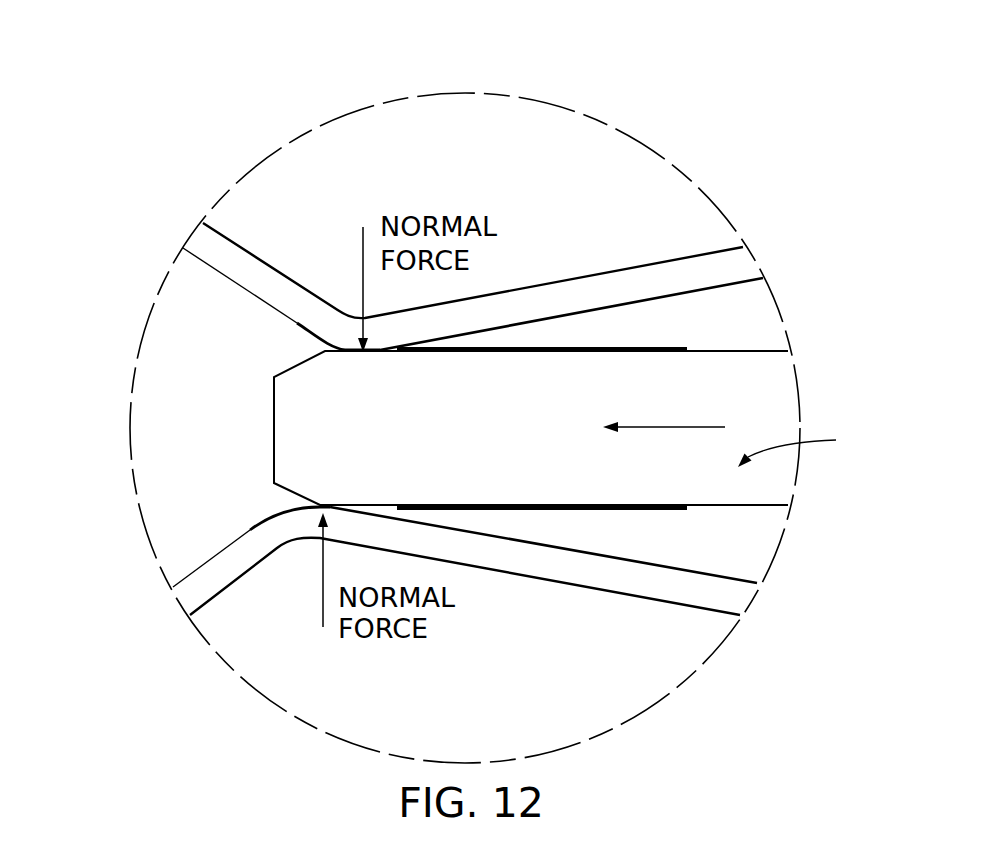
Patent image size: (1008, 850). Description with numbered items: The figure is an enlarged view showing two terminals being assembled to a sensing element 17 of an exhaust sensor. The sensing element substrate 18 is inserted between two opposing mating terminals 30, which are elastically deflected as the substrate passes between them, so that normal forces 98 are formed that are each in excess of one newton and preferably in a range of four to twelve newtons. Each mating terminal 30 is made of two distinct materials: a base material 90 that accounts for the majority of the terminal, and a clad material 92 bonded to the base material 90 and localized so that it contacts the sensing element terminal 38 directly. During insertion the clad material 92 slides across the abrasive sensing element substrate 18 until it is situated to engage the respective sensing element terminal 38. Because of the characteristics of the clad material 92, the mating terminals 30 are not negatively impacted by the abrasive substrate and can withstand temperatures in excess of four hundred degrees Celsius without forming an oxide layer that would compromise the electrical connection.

The sensing element 17 is at (802, 447).
The sensing element substrate 18 is at (767, 383).
The mating terminal 30 is at (720, 263).
The sensing element terminal 38 is at (684, 347).
The base material 90 is at (297, 323).
The clad material 92 is at (323, 349).
The normal force 98 is at (360, 248).